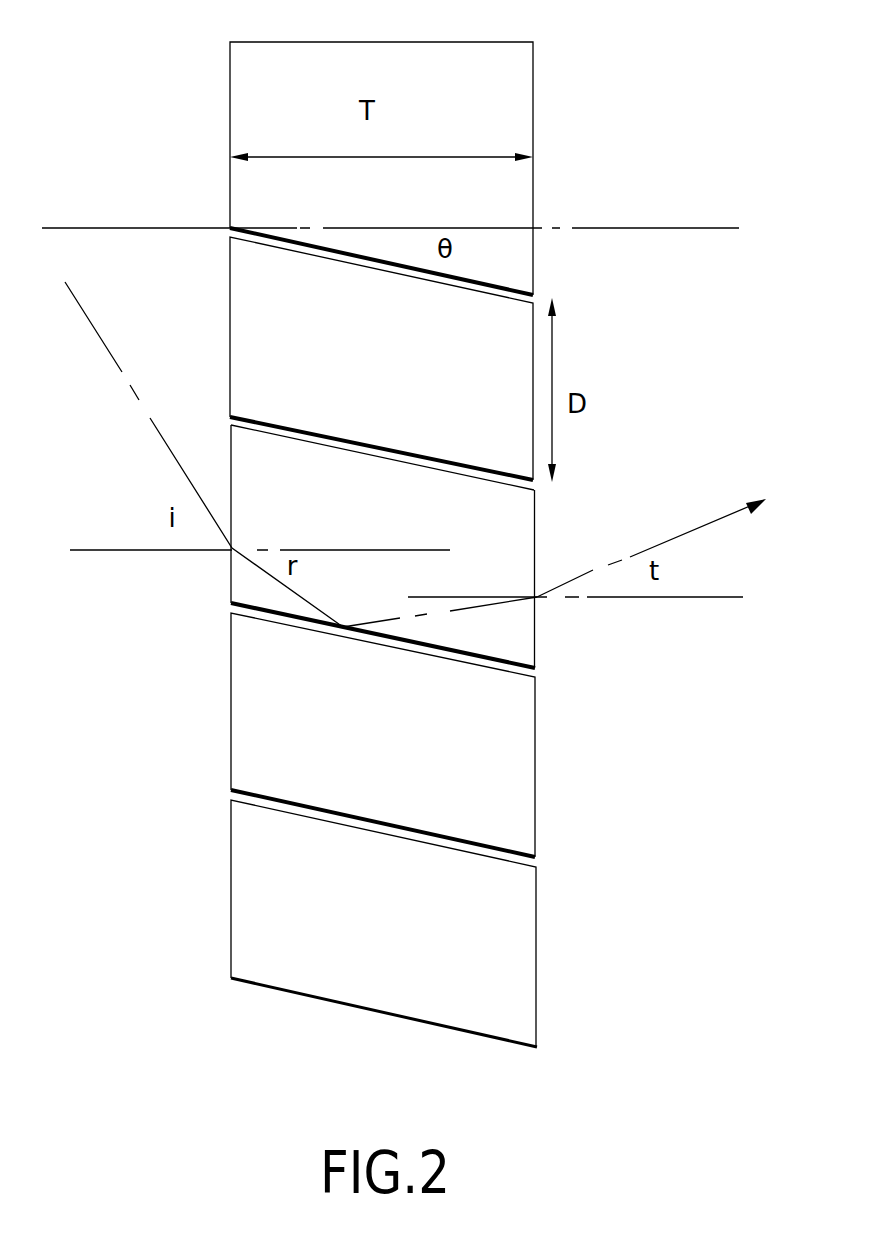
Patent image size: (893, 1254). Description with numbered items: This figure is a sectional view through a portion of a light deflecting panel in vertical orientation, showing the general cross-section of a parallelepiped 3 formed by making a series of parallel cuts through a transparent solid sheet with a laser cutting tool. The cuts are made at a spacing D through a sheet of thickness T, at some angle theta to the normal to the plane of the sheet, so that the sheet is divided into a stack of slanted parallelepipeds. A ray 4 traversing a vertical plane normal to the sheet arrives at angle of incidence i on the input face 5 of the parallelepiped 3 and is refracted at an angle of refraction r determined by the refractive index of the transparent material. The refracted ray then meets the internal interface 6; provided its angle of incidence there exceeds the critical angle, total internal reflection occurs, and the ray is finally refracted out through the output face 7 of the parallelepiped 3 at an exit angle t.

The parallelepiped 3 is at (381, 358).
The ray 4 is at (194, 454).
The input face 5 is at (231, 450).
The internal interface 6 is at (435, 645).
The output face 7 is at (537, 570).